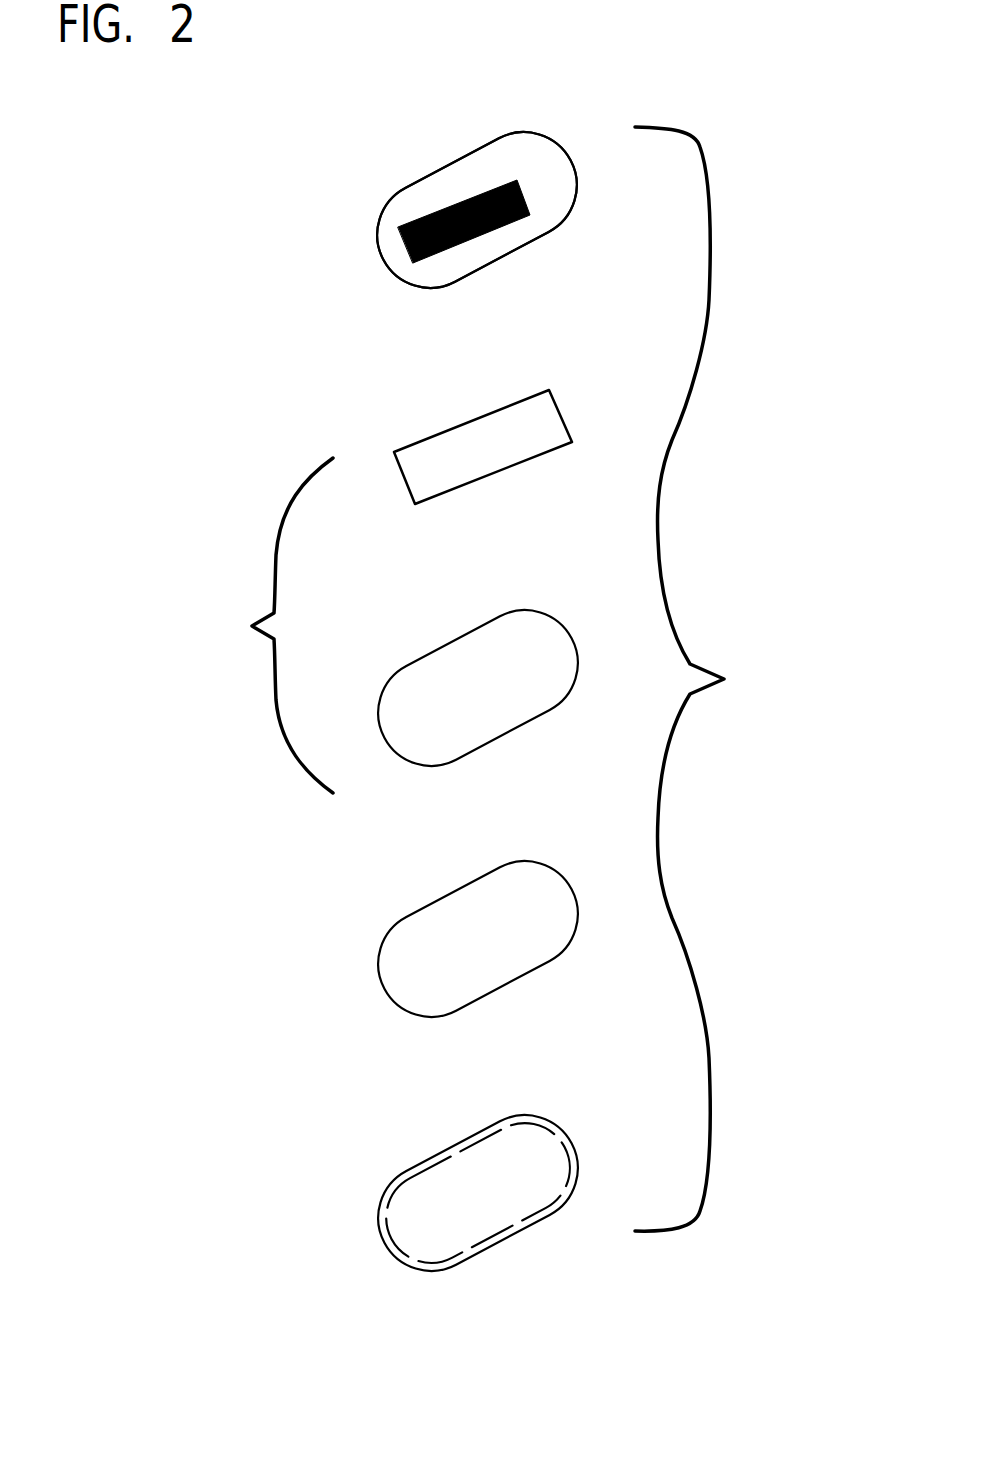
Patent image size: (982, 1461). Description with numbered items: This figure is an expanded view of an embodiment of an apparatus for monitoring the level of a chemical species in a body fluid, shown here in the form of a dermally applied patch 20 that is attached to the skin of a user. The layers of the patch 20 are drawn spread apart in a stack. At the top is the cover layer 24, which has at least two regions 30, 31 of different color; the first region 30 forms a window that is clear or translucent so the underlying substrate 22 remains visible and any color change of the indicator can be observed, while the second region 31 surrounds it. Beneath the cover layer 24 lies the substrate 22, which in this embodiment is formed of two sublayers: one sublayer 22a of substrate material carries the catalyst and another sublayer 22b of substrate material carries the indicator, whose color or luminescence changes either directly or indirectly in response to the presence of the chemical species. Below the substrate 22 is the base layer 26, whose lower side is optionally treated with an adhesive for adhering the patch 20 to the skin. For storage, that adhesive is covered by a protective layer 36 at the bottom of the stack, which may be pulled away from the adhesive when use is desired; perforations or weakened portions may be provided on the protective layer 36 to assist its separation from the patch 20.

The dermally applied patch 20 is at (707, 679).
The substrate 22 is at (264, 625).
The sublayer 22a is at (533, 612).
The sublayer 22b is at (523, 400).
The cover layer 24 is at (378, 225).
The base layer 26 is at (380, 952).
The first region 30 is at (417, 217).
The second region 31 is at (512, 135).
The protective layer 36 is at (383, 1232).